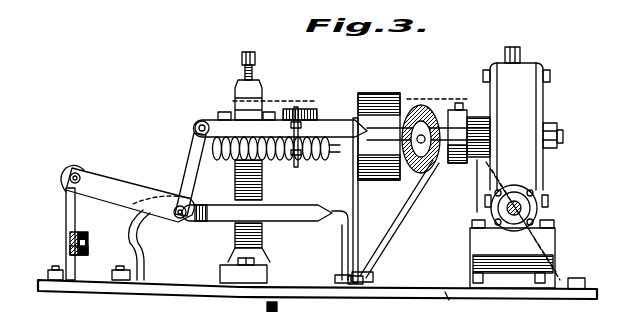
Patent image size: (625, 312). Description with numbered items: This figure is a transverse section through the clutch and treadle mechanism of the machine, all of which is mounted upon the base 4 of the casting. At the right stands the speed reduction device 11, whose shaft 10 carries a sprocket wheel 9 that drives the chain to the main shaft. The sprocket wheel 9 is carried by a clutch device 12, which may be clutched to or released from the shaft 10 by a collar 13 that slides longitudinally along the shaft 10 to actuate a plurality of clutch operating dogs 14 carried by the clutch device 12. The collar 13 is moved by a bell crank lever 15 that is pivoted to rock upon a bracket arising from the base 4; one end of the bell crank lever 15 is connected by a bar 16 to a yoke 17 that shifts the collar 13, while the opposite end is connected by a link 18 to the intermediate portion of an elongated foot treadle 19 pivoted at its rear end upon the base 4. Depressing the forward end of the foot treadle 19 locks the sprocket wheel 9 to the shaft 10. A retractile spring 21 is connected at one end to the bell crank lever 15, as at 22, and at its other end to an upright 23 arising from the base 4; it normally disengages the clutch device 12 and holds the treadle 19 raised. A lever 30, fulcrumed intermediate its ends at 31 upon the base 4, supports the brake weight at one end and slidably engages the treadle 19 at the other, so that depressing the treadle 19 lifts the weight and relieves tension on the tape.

The base 4 is at (187, 289).
The sprocket wheel 9 is at (296, 107).
The shaft 10 is at (563, 137).
The speed reduction device 11 is at (537, 65).
The clutch device 12 is at (383, 95).
The collar 13 is at (451, 109).
The clutch operating dogs 14 is at (421, 105).
The bell crank lever 15 is at (186, 170).
The bar 16 is at (338, 121).
The yoke 17 is at (463, 172).
The link 18 is at (66, 210).
The foot treadle 19 is at (70, 249).
The retractile spring 21 is at (326, 163).
The spring connection 22 is at (197, 126).
The upright 23 is at (359, 197).
The lever 30 is at (84, 233).
The fulcrum 31 is at (68, 237).